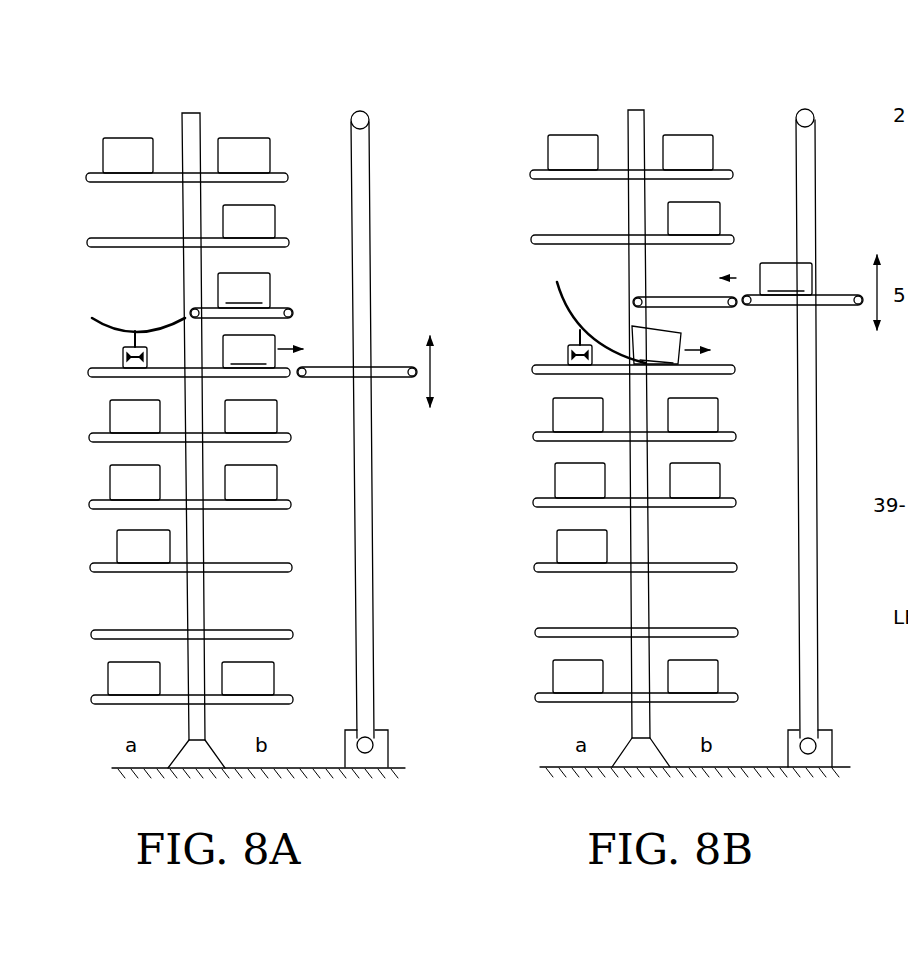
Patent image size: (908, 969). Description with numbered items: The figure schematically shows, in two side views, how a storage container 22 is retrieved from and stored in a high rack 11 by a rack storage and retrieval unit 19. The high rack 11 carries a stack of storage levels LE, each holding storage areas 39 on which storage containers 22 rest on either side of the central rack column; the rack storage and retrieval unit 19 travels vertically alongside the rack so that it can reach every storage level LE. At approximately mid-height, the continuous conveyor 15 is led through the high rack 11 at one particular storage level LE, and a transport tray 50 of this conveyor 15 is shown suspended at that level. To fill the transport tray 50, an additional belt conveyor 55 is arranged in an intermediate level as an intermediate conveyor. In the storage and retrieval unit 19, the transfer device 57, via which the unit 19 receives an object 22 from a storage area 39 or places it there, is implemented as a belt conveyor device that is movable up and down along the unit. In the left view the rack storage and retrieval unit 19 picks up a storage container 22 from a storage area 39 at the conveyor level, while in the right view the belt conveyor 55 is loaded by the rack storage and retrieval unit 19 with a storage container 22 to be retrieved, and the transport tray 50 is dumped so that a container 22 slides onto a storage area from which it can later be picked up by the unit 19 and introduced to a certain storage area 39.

In FIG. 8A, the high rack 11 is at (215, 96).
In FIG. 8B, the high rack 11 is at (660, 96).
In FIG. 8A, the conveyor 15 is at (123, 353).
In FIG. 8B, the conveyor 15 is at (568, 355).
In FIG. 8A, the rack storage and retrieval unit 19 is at (382, 104).
In FIG. 8B, the rack storage and retrieval unit 19 is at (822, 102).
In FIG. 8A, the storage container 22 is at (103, 143).
In FIG. 8B, the storage container 22 is at (548, 142).
In FIG. 8A, the storage area 39 is at (100, 480).
In FIG. 8B, the storage area 39 is at (545, 478).
In FIG. 8A, the transport tray 50 is at (92, 318).
In FIG. 8B, the transport tray 50 is at (557, 292).
In FIG. 8A, the belt conveyor 55 is at (293, 310).
In FIG. 8B, the belt conveyor 55 is at (742, 308).
In FIG. 8A, the transfer device 57 is at (382, 368).
In FIG. 8B, the transfer device 57 is at (834, 295).
In FIG. 8A, the storage level LE is at (110, 585).
In FIG. 8B, the storage level LE is at (555, 585).